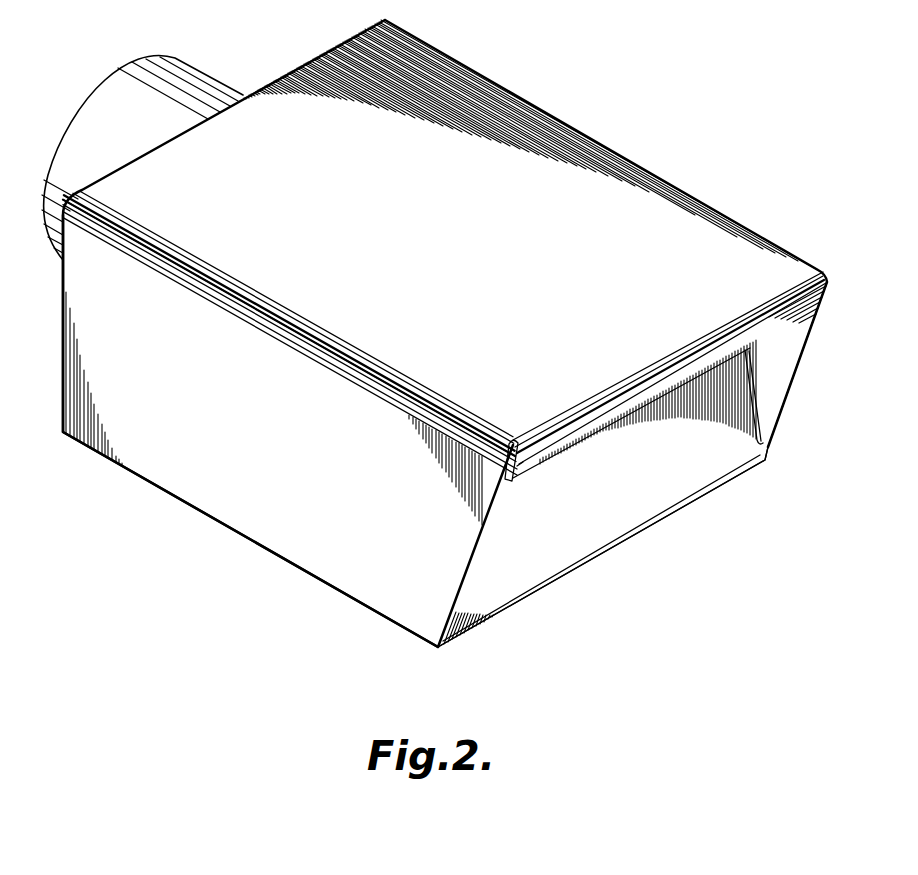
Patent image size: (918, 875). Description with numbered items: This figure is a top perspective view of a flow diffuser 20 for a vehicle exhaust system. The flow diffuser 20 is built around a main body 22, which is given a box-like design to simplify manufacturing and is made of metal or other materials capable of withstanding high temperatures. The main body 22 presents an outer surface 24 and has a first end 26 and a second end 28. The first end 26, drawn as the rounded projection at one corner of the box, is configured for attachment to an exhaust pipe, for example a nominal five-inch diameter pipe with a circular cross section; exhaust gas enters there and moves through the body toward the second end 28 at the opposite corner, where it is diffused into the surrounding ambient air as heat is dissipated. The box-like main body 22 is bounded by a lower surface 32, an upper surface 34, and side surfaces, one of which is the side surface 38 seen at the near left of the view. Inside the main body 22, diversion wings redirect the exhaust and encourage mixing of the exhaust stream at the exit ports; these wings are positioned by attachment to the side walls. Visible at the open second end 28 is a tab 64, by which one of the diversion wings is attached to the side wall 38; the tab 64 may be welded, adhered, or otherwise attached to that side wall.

The flow diffuser 20 is at (675, 82).
The main body 22 is at (507, 88).
The outer surface 24 is at (300, 512).
The first end 26 is at (134, 61).
The second end 28 is at (790, 293).
The lower surface 32 is at (598, 562).
The upper surface 34 is at (518, 475).
The side surface 38 is at (160, 443).
The tab 64 is at (753, 390).